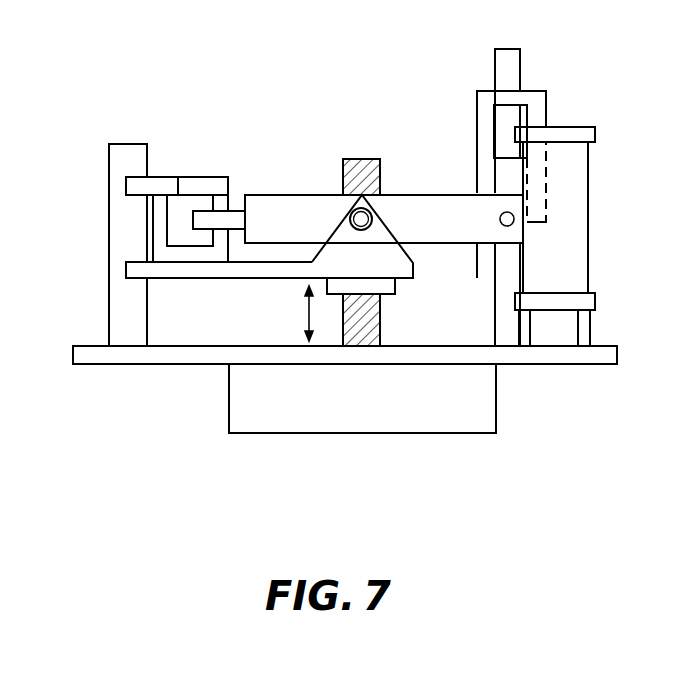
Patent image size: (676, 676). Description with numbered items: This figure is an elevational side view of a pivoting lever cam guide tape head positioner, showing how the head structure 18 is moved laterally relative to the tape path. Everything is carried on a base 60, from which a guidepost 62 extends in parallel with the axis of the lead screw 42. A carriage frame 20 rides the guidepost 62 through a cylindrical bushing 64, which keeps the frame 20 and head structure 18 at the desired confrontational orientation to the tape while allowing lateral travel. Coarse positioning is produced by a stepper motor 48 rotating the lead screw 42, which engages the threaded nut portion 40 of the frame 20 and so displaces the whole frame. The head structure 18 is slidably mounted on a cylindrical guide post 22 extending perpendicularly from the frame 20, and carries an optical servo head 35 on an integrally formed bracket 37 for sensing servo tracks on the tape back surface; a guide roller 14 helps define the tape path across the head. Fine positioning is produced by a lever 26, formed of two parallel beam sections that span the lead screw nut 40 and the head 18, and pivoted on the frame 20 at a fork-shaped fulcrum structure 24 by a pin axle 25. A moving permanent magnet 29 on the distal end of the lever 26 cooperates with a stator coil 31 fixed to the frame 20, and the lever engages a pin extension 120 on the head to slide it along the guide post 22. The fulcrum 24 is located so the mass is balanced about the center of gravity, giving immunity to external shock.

The tape guide roller 14 is at (575, 278).
The head structure 18 is at (508, 173).
The frame 20 is at (217, 272).
The guide post 22 is at (513, 67).
The fulcrum structure 24 is at (380, 245).
The pin axle 25 is at (372, 211).
The lever 26 is at (313, 195).
The moving permanent magnet 29 is at (232, 223).
The stator coil 31 is at (202, 250).
The optical servo head 35 is at (550, 200).
The bracket 37 is at (483, 100).
The threaded nut portion 40 is at (387, 297).
The lead screw 42 is at (337, 157).
The stepper motor 48 is at (375, 433).
The base 60 is at (513, 357).
The guidepost 62 is at (121, 329).
The cylindrical bushing 64 is at (126, 187).
The pin extension 120 is at (500, 227).